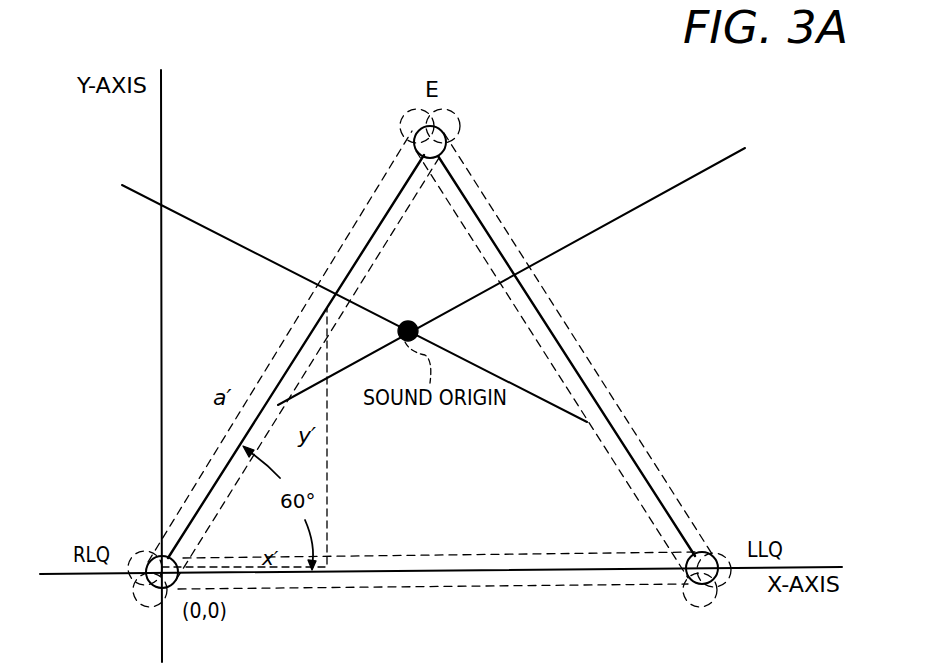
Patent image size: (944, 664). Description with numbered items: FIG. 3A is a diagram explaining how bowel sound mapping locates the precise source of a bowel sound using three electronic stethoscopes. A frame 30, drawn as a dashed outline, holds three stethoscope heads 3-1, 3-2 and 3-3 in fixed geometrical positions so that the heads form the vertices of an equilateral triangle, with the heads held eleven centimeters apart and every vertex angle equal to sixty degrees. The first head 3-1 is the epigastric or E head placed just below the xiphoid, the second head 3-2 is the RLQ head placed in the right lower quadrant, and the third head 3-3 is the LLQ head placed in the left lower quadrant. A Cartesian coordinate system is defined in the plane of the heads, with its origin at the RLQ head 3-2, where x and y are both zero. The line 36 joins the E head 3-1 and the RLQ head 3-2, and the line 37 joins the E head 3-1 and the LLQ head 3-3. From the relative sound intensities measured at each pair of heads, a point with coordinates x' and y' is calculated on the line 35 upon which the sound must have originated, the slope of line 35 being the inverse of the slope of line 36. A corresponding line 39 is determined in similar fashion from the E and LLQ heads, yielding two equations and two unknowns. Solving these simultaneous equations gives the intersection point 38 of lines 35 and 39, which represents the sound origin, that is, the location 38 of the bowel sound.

The frame 30 is at (575, 338).
The line on which the sound originates 35 is at (232, 240).
The line between the two heads 3-1 and 3-2 36 is at (372, 232).
The line between E head and LLQ head 37 is at (470, 202).
The intersection point 38 is at (408, 320).
The line 39 is at (638, 208).
The first stethoscope head 3-1 is at (440, 140).
The second stethoscope head 3-2 is at (155, 576).
The third stethoscope head 3-3 is at (705, 580).